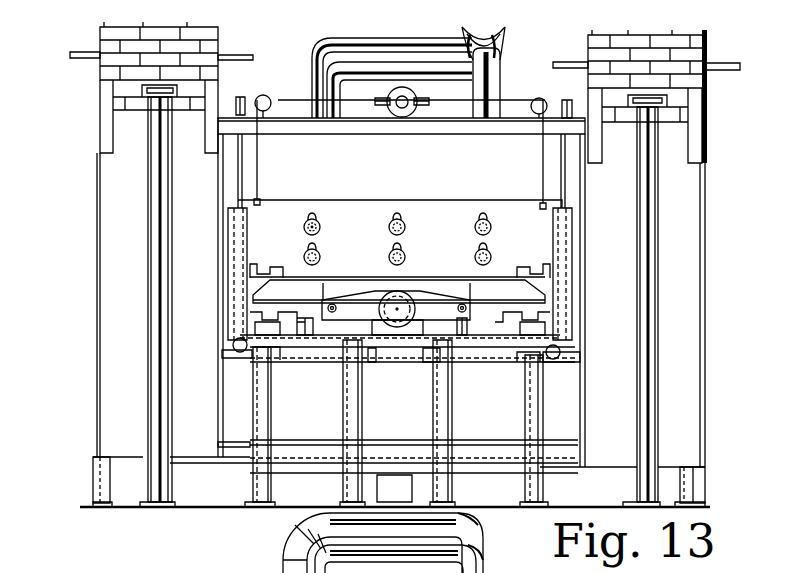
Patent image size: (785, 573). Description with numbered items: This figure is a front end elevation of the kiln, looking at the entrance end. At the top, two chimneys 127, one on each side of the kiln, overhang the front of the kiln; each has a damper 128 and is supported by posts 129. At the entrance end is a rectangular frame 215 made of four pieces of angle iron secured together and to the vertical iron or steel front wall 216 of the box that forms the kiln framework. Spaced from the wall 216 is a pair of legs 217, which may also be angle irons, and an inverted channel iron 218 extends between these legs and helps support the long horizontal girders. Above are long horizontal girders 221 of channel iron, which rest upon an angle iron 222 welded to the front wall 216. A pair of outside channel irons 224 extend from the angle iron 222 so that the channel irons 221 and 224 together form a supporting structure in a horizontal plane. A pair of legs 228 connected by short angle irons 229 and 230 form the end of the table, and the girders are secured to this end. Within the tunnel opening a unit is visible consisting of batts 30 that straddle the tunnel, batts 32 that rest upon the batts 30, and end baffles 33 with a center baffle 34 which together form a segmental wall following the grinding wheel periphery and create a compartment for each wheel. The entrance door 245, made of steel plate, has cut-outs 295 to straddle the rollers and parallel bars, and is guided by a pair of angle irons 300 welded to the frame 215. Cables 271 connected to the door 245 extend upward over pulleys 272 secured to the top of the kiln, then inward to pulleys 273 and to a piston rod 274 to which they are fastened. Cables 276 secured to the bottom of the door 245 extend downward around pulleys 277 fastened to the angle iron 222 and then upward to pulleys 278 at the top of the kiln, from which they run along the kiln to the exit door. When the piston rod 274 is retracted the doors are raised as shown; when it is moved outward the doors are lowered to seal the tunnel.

The chimney 127 is at (108, 35).
The damper 128 is at (78, 62).
The post 129 is at (146, 284).
The vertical front wall 216 is at (97, 339).
The rectangular frame 215 is at (280, 116).
The leg 217 is at (268, 414).
The inverted channel iron 218 is at (318, 476).
The horizontal girder 221 is at (378, 362).
The angle iron 222 is at (223, 361).
The outside channel iron 224 is at (289, 360).
The leg 228 is at (345, 424).
The short angle iron 229 is at (373, 468).
The short angle iron 230 is at (387, 360).
The door 245 is at (338, 200).
The cable 271 is at (296, 98).
The pulley 272 is at (266, 86).
The pulley 273 is at (378, 100).
The piston rod 274 is at (404, 109).
The cable 276 is at (272, 273).
The pulley 277 is at (240, 353).
The pulley 278 is at (240, 97).
The cut-out 295 is at (265, 261).
The angle iron 300 is at (228, 245).
The batt 30 is at (265, 308).
The batt 32 is at (297, 297).
The end baffle 33 is at (328, 292).
The center baffle 34 is at (433, 291).